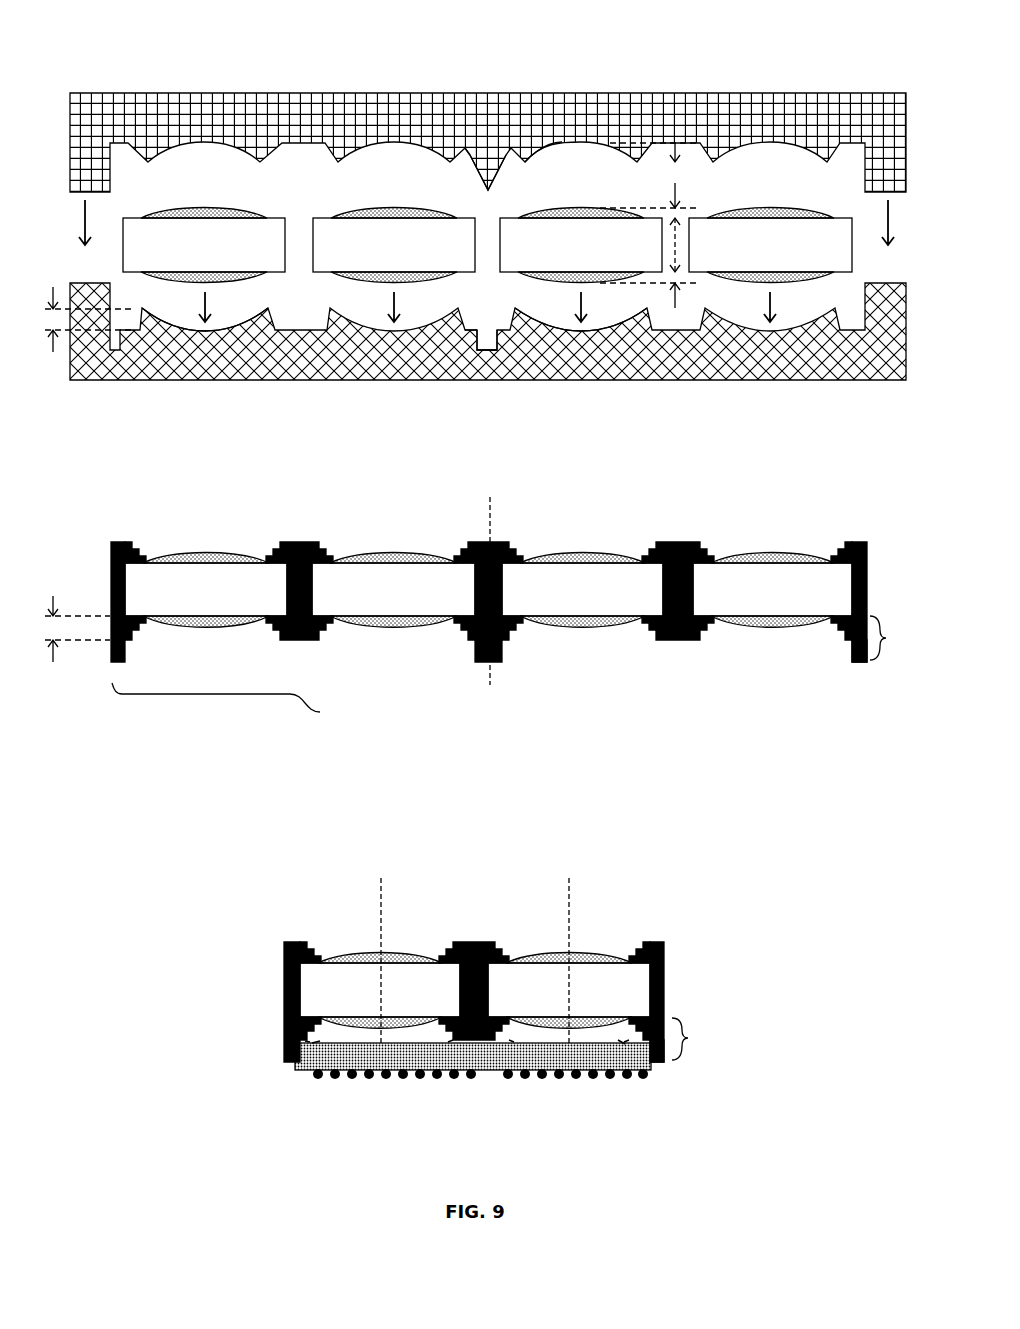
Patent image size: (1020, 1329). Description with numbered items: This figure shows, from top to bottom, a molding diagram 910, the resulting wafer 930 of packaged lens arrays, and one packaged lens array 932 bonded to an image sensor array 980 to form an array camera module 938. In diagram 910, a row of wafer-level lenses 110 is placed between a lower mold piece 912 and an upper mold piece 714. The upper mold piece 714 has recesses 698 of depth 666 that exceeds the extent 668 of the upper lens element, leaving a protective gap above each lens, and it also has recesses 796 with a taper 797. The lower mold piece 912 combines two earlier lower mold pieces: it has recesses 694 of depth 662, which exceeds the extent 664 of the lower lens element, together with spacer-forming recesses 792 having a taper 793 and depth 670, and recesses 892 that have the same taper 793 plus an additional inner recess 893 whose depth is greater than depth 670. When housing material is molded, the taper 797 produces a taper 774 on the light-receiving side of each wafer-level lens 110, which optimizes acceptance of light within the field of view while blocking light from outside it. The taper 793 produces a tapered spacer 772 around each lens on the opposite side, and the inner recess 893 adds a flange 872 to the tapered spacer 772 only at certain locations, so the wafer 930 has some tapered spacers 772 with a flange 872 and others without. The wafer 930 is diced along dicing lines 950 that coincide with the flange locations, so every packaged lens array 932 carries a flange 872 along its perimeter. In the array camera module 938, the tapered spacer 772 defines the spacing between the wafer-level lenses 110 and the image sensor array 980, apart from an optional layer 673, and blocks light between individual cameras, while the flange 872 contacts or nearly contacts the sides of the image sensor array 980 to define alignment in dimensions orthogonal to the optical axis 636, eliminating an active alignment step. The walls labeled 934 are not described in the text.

The diagram 910 is at (105, 55).
The recesses 796 is at (487, 140).
The recesses 698 is at (575, 140).
The depth 666 is at (673, 148).
The extent 668 is at (684, 203).
The upper mold piece 714 is at (805, 95).
The wafer-level lenses 110 is at (245, 198).
The taper 797 is at (488, 184).
The taper 793 is at (497, 308).
The depth 670 is at (53, 352).
The recesses 792 is at (292, 380).
The inner recess 893 is at (462, 366).
The recesses 892 is at (486, 348).
The recesses 694 is at (573, 380).
The depth 662 is at (652, 320).
The extent 664 is at (684, 300).
The lower mold piece 912 is at (800, 382).
The wafer 930 is at (90, 577).
The taper 774 is at (138, 552).
The dicing lines 950 is at (488, 507).
The tapered spacer 772 is at (886, 636).
The flange 872 is at (886, 642).
The packaged lens array 932 is at (320, 712).
The array camera module 938 is at (673, 840).
The molded wall 934 is at (293, 944).
The optical axis 636 is at (380, 907).
The layer 673 is at (622, 1062).
The image sensor array 980 is at (495, 1072).